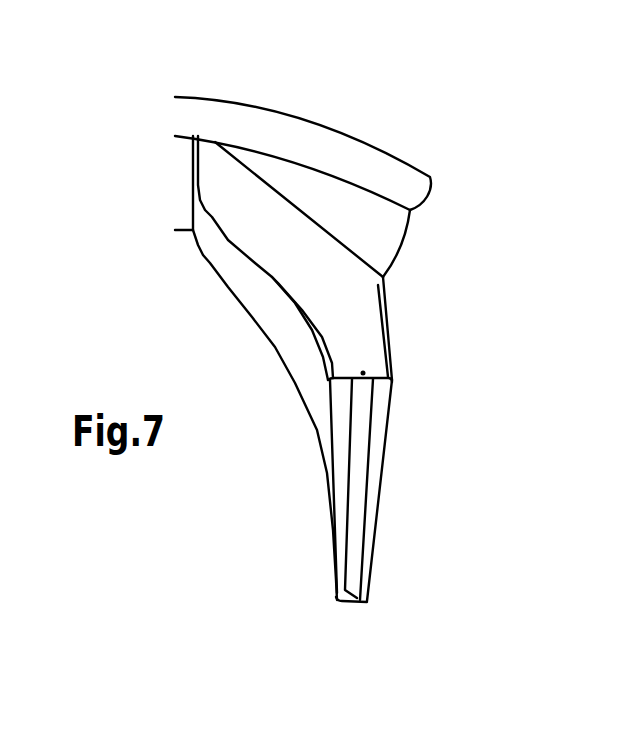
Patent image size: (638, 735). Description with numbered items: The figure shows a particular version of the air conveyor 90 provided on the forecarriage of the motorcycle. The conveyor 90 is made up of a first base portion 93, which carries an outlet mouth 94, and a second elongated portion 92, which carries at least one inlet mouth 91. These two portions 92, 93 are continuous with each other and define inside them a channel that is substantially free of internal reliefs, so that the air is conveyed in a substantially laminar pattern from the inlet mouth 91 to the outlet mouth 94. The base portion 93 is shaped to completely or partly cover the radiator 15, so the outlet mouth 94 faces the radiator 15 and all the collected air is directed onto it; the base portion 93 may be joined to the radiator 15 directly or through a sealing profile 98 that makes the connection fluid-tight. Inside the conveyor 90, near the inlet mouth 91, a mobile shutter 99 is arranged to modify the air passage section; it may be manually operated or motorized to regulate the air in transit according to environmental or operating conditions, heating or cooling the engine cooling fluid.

The radiator 15 is at (380, 167).
The air conveyor 90 is at (277, 388).
The inlet mouth 91 is at (337, 457).
The second elongated portion 92 is at (372, 350).
The first base portion 93 is at (232, 182).
The outlet mouth 94 is at (285, 195).
The sealing profile 98 is at (390, 238).
The mobile shutter 99 is at (363, 433).